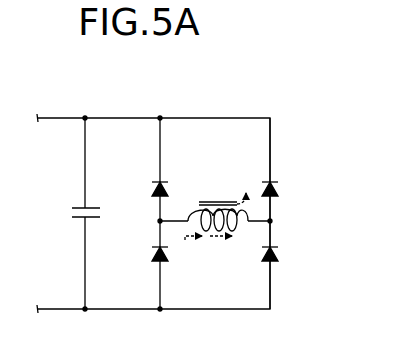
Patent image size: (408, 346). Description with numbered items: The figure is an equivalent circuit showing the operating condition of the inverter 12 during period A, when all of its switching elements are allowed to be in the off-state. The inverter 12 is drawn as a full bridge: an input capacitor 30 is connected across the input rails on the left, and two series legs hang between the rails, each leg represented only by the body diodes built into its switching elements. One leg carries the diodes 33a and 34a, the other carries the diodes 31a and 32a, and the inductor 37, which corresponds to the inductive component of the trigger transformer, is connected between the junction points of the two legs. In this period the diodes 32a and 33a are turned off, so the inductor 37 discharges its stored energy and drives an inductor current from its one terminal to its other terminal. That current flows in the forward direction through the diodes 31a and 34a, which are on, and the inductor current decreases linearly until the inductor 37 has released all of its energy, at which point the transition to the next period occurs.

The inverter 12 is at (216, 99).
The input capacitor 30 is at (72, 210).
The diode 31a is at (279, 189).
The diode 32a is at (279, 257).
The diode 33a is at (152, 190).
The diode 34a is at (168, 255).
The inductor 37 is at (218, 202).